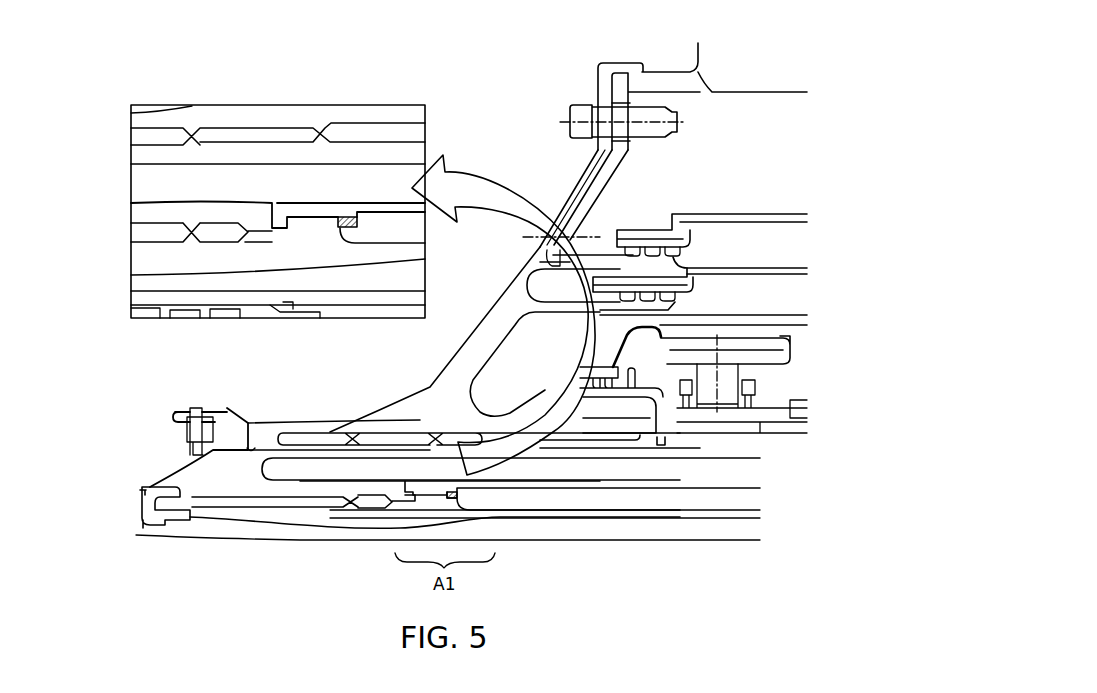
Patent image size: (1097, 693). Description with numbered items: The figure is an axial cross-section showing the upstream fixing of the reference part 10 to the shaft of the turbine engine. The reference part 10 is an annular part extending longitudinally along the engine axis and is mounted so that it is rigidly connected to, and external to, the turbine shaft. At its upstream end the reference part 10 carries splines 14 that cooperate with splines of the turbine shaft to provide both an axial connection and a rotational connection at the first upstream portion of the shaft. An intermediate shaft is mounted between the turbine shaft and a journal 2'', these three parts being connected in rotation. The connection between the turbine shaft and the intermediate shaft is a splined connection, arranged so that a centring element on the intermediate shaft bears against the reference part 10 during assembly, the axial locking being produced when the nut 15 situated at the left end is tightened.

The journal 2'' is at (465, 339).
The reference part 10 is at (598, 483).
The splines 14 is at (353, 217).
The nut 15 is at (163, 520).